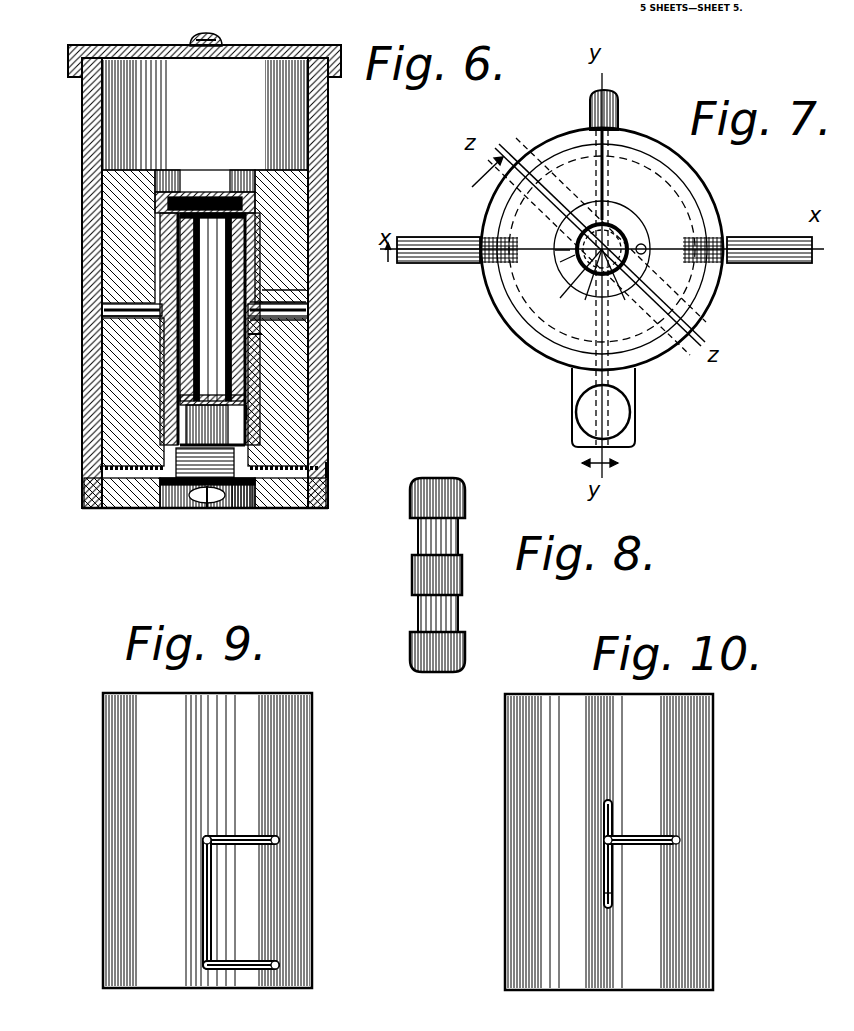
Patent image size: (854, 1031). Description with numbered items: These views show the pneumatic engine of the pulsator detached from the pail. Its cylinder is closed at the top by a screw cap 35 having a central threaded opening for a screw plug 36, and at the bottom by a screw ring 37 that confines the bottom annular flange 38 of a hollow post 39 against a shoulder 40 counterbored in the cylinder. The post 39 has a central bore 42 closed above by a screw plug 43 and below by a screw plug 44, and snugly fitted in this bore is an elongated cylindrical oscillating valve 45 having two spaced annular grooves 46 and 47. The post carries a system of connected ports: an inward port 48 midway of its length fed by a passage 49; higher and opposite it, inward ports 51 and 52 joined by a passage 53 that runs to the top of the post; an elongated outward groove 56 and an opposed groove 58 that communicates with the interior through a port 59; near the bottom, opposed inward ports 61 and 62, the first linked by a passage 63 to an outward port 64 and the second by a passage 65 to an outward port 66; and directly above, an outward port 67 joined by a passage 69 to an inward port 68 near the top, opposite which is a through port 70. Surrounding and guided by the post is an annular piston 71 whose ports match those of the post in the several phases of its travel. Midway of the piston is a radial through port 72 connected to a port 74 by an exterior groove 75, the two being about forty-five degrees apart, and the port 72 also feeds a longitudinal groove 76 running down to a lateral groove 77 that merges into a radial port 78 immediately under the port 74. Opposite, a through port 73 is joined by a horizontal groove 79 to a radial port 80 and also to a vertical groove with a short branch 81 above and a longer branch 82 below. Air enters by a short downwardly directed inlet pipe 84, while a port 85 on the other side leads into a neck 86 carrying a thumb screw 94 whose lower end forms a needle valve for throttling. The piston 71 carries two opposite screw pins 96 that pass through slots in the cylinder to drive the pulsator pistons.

In FIG. 6, the screw cap 35 is at (168, 50).
In FIG. 6, the screw plug 36 is at (222, 42).
In FIG. 6, the screw ring 37 is at (164, 510).
In FIG. 6, the bottom annular flange 38 is at (298, 480).
In FIG. 6, the hollow post 39 is at (248, 195).
In FIG. 6, the shoulder 40 is at (95, 470).
In FIG. 6, the central bore 42 is at (212, 195).
In FIG. 6, the screw plug 43 is at (205, 114).
In FIG. 6, the screw plug 44 is at (207, 512).
In FIG. 6, the oscillating valve 45 is at (168, 380).
In FIG. 8, the oscillating valve 45 is at (412, 517).
In FIG. 6, the annular groove 46 is at (170, 258).
In FIG. 8, the annular groove 46 is at (460, 528).
In FIG. 6, the annular groove 47 is at (236, 372).
In FIG. 7, the annular groove 47 is at (565, 248).
In FIG. 8, the annular groove 47 is at (460, 603).
In FIG. 7, the port 48 is at (596, 275).
In FIG. 7, the passage 49 is at (570, 258).
In FIG. 7, the port 51 is at (612, 275).
In FIG. 7, the port 52 is at (620, 240).
In FIG. 7, the passage 53 is at (646, 247).
In FIG. 7, the elongated outwardly-opening port 56 is at (610, 278).
In FIG. 7, the outwardly-opening groove 58 is at (612, 220).
In FIG. 7, the port 59 is at (597, 212).
In FIG. 6, the port 61 is at (200, 512).
In FIG. 6, the port 62 is at (237, 512).
In FIG. 6, the passage 63 is at (167, 413).
In FIG. 6, the port 64 is at (172, 290).
In FIG. 6, the passage 65 is at (247, 395).
In FIG. 6, the port 66 is at (257, 333).
In FIG. 6, the port 67 is at (265, 296).
In FIG. 6, the port 68 is at (257, 210).
In FIG. 6, the passage 69 is at (248, 252).
In FIG. 6, the through port 70 is at (170, 190).
In FIG. 6, the annular piston 71 is at (310, 167).
In FIG. 9, the annular piston 71 is at (306, 755).
In FIG. 10, the annular piston 71 is at (505, 752).
In FIG. 7, the radial through port 72 is at (593, 333).
In FIG. 9, the radial through port 72 is at (208, 836).
In FIG. 7, the radial through port 73 is at (604, 160).
In FIG. 10, the radial through port 73 is at (604, 841).
In FIG. 6, the radial through port 74 is at (308, 304).
In FIG. 9, the radial through port 74 is at (279, 838).
In FIG. 6, the exterior groove 75 is at (320, 318).
In FIG. 7, the exterior groove 75 is at (640, 343).
In FIG. 9, the exterior groove 75 is at (242, 833).
In FIG. 9, the longitudinal groove 76 is at (208, 898).
In FIG. 6, the lateral groove 77 is at (234, 462).
In FIG. 9, the lateral groove 77 is at (247, 968).
In FIG. 6, the radial port 78 is at (326, 467).
In FIG. 9, the radial port 78 is at (277, 968).
In FIG. 6, the horizontal groove 79 is at (115, 312).
In FIG. 7, the horizontal groove 79 is at (558, 158).
In FIG. 10, the horizontal groove 79 is at (635, 833).
In FIG. 6, the radial port 80 is at (110, 322).
In FIG. 10, the radial port 80 is at (680, 839).
In FIG. 10, the short branch 81 is at (603, 808).
In FIG. 10, the longer branch 82 is at (604, 893).
In FIG. 7, the inlet pipe 84 is at (620, 97).
In FIG. 7, the port 85 is at (593, 403).
In FIG. 7, the neck 86 is at (636, 437).
In FIG. 7, the thumb screw 94 is at (617, 447).
In FIG. 7, the screw pins 96 is at (453, 237).